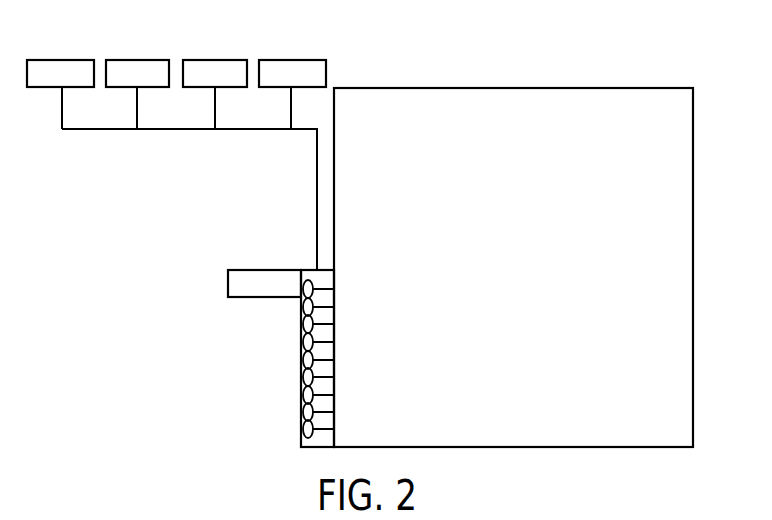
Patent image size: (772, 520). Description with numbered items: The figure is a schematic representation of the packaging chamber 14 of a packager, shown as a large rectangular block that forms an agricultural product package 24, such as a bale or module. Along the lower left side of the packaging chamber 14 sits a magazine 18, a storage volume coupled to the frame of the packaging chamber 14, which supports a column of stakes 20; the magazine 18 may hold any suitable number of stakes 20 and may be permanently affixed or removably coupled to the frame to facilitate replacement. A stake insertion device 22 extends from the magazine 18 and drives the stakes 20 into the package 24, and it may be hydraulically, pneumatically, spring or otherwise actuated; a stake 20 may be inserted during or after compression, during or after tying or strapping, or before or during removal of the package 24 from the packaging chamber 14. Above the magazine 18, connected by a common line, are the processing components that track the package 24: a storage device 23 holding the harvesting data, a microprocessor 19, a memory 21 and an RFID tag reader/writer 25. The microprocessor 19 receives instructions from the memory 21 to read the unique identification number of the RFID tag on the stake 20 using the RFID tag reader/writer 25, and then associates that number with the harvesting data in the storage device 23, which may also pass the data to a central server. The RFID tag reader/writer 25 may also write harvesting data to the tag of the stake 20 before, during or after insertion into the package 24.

The packaging chamber 14 is at (693, 125).
The magazine 18 is at (301, 444).
The microprocessor 19 is at (137, 60).
The stake 20 is at (323, 287).
The memory 21 is at (215, 60).
The stake insertion device 22 is at (228, 289).
The storage device 23 is at (62, 60).
The agricultural product package 24 is at (405, 135).
The RFID tag reader/writer 25 is at (288, 60).